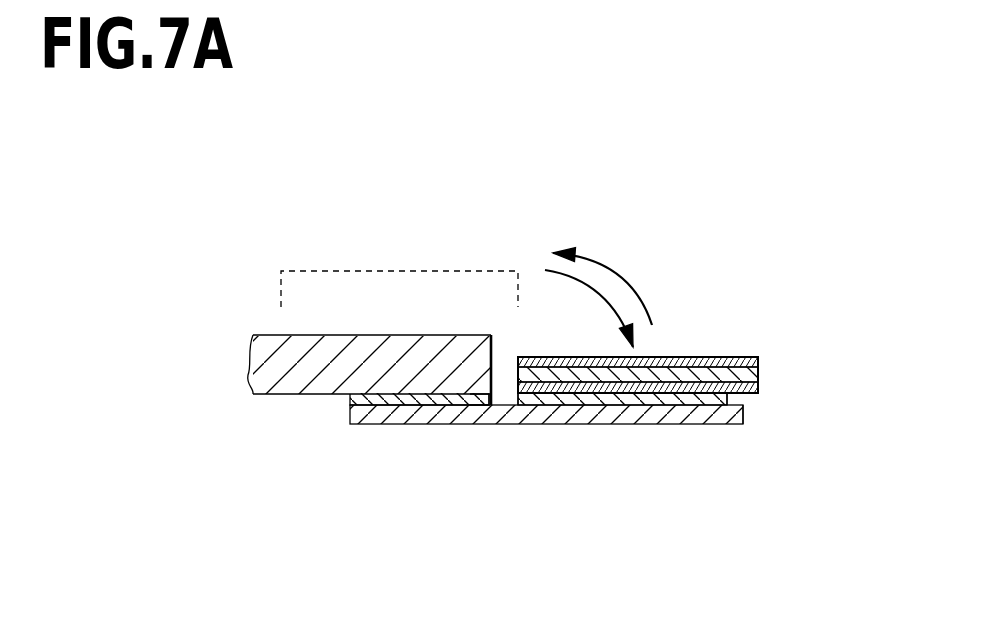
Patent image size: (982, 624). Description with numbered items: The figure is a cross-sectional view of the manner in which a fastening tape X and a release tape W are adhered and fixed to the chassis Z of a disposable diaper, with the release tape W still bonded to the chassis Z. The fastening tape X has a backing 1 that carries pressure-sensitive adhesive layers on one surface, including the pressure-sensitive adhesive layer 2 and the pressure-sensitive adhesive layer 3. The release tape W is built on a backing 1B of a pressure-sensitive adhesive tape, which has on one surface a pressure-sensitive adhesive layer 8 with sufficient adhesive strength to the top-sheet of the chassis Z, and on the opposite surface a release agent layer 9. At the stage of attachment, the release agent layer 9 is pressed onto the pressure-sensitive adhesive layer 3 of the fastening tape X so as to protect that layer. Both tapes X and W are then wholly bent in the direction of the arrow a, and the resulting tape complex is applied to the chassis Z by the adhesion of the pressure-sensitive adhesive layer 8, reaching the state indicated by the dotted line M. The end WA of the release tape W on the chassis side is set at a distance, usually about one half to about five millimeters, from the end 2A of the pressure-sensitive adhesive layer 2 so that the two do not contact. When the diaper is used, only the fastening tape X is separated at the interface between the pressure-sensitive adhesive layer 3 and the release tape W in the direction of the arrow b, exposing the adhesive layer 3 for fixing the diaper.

The chassis of the disposable diaper Z is at (276, 378).
The pressure-sensitive adhesive layer 2 is at (350, 397).
The end of the pressure-sensitive adhesive layer 2A is at (493, 403).
The backing 1 is at (743, 420).
The pressure-sensitive adhesive layer 3 is at (727, 398).
The release agent layer 9 is at (758, 386).
The pressure-sensitive adhesive layer 8 is at (758, 373).
The backing of the pressure-sensitive adhesive tape 1B is at (758, 360).
The release tape W is at (857, 297).
The fastening tape X is at (800, 405).
The dotted line M is at (413, 271).
The end of the release tape WA is at (505, 383).
The arrow a is at (610, 268).
The arrow b is at (588, 288).